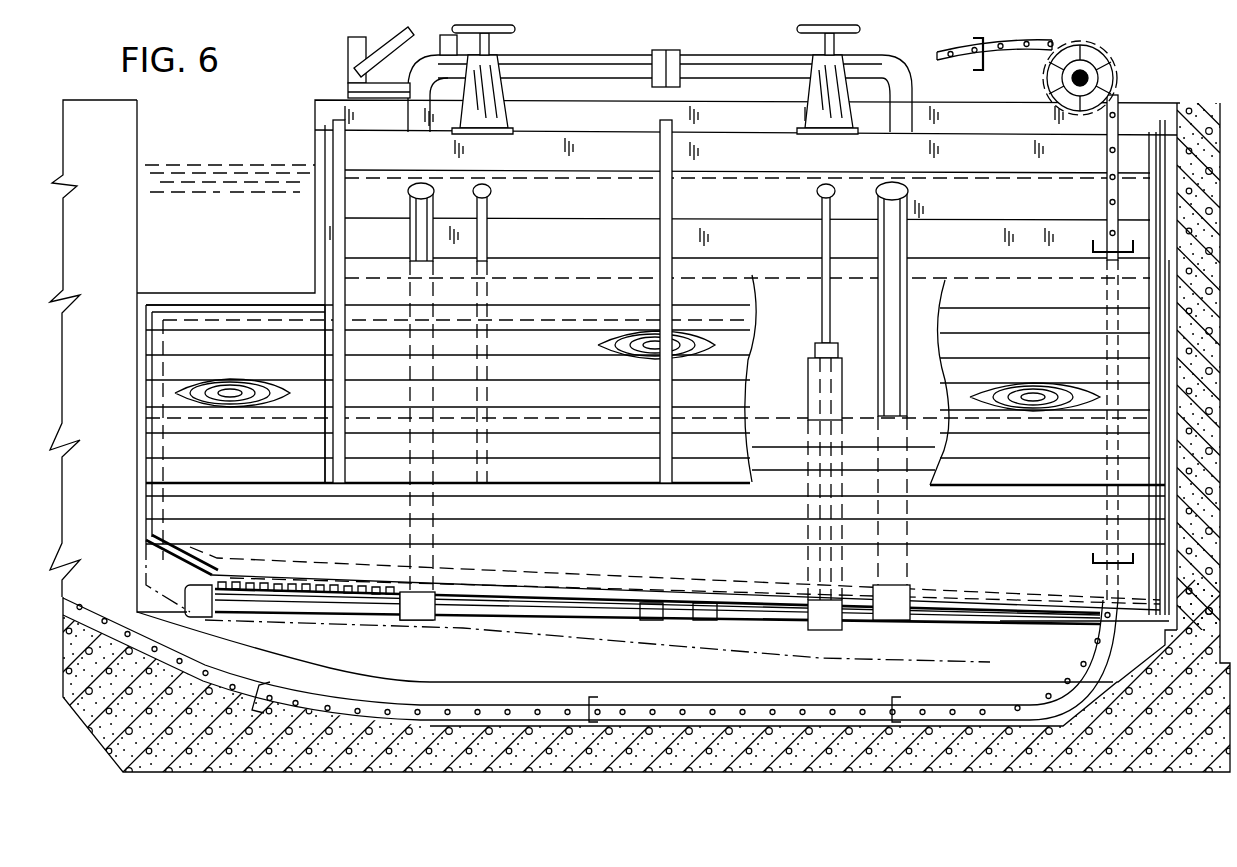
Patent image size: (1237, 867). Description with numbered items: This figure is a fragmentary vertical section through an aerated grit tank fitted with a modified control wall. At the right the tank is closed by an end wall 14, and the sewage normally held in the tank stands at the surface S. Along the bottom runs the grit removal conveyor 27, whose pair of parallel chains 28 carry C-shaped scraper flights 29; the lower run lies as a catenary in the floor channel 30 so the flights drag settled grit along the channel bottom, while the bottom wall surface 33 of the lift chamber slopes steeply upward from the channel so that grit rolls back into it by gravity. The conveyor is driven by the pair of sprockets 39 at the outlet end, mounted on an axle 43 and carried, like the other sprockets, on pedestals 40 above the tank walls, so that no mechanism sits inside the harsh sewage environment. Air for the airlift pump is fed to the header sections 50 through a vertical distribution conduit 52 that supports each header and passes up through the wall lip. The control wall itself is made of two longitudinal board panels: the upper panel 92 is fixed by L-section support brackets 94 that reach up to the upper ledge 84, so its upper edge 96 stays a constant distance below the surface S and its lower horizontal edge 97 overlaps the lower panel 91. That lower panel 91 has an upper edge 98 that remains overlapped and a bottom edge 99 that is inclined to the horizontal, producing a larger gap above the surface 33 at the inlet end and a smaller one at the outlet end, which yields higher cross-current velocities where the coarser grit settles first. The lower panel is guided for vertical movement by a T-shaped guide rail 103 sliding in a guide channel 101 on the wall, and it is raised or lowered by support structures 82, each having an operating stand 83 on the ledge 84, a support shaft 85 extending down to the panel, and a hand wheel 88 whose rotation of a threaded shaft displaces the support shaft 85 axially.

The surface of the sewage S is at (210, 163).
The end wall 14 is at (1220, 118).
The continuous conveyor 27 is at (420, 690).
The chains 28 is at (1122, 115).
The scraper flights 29 is at (268, 683).
The channel 30 is at (878, 718).
The bottom wall surface 33 is at (549, 672).
The drive sprockets 39 is at (1046, 80).
The pedestals 40 is at (350, 46).
The axle 43 is at (1115, 70).
The header sections 50 is at (495, 605).
The vertical distribution conduit 52 is at (412, 210).
The support structures 82 is at (882, 54).
The operating stand 83 is at (504, 92).
The upper ledge 84 is at (375, 128).
The support shaft 85 is at (490, 210).
The operating hand wheel 88 is at (517, 31).
The lower panel 91 is at (188, 535).
The upper panel 92 is at (628, 294).
The support brackets 94 is at (333, 205).
The upper edge 96 is at (535, 262).
The lower horizontal edge 97 is at (178, 495).
The upper edge 98 is at (790, 420).
The bottom edge 99 is at (325, 595).
The guide channel 101 is at (815, 375).
The T-shaped guide rail 103 is at (818, 348).